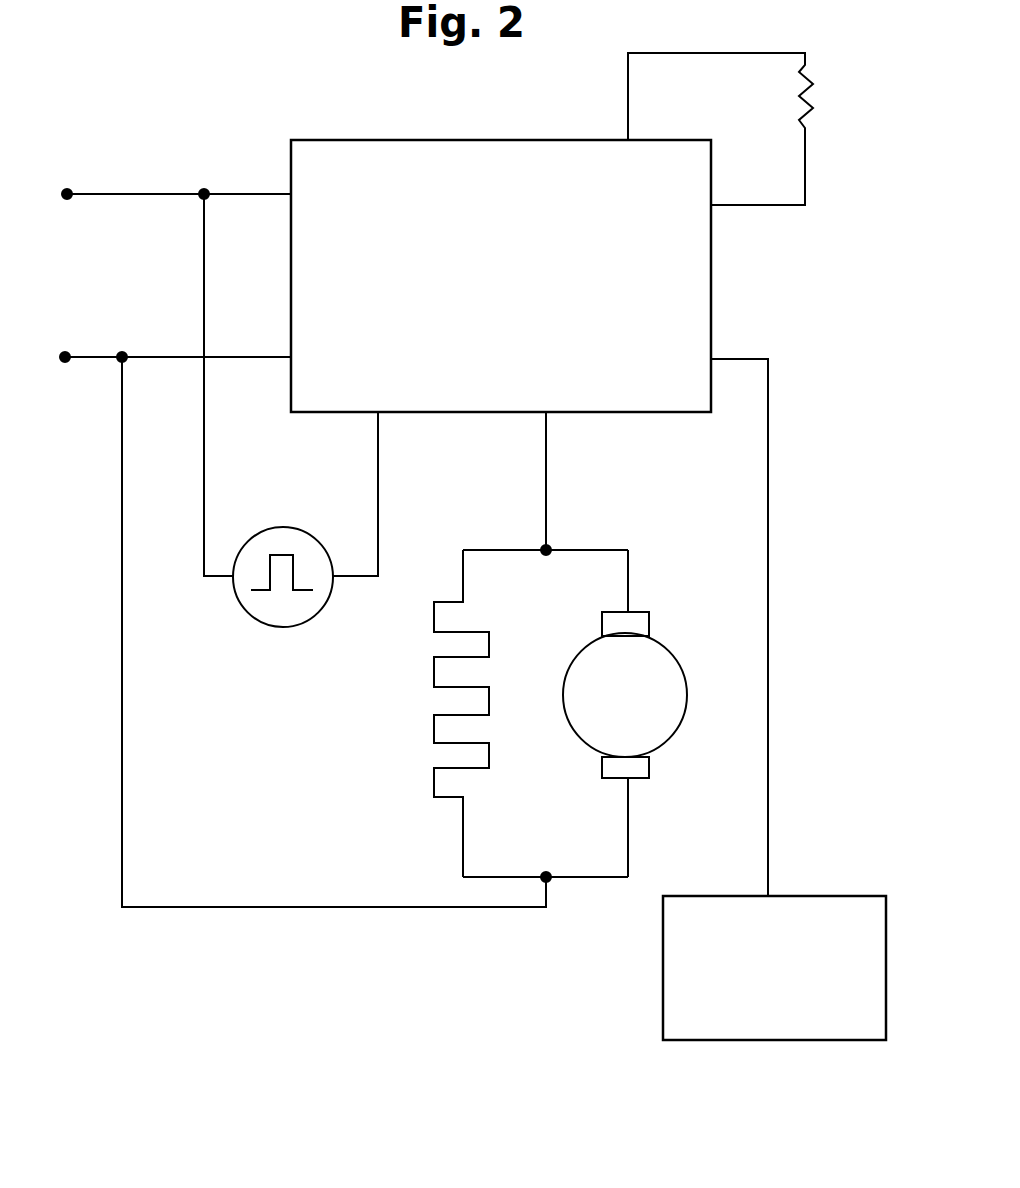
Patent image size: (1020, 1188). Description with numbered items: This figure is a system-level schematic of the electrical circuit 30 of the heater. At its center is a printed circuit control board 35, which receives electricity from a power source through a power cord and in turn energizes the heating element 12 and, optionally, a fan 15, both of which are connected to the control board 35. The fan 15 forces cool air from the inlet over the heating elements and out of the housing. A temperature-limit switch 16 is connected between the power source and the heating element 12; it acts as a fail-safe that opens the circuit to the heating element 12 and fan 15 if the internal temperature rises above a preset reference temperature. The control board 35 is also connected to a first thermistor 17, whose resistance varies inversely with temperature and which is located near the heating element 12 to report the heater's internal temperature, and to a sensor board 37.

The electrical circuit 30 is at (421, 1050).
The printed circuit control board 35 is at (355, 138).
The first thermistor 17 is at (805, 172).
The temperature-limit switch 16 is at (240, 602).
The heating element 12 is at (434, 742).
The fan 15 is at (672, 660).
The sensor board 37 is at (663, 977).